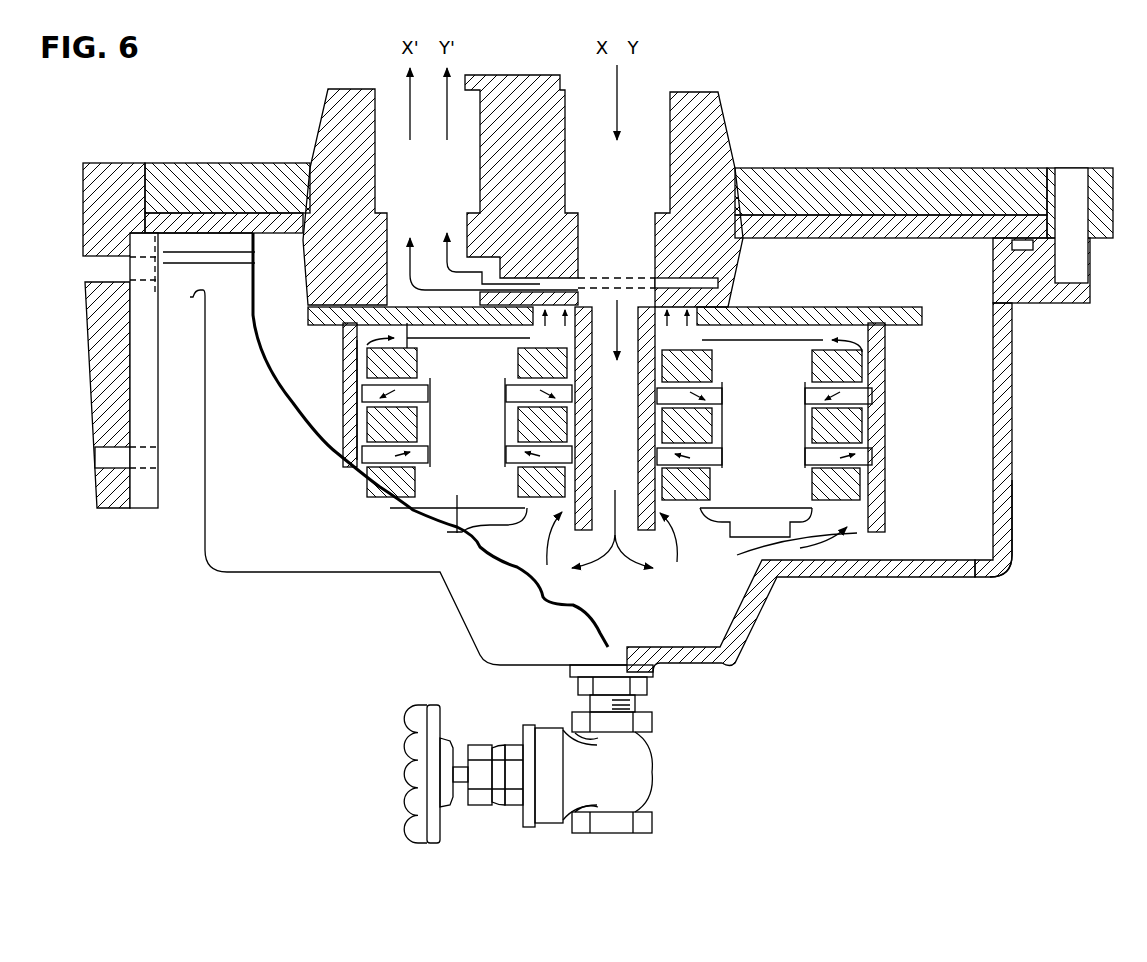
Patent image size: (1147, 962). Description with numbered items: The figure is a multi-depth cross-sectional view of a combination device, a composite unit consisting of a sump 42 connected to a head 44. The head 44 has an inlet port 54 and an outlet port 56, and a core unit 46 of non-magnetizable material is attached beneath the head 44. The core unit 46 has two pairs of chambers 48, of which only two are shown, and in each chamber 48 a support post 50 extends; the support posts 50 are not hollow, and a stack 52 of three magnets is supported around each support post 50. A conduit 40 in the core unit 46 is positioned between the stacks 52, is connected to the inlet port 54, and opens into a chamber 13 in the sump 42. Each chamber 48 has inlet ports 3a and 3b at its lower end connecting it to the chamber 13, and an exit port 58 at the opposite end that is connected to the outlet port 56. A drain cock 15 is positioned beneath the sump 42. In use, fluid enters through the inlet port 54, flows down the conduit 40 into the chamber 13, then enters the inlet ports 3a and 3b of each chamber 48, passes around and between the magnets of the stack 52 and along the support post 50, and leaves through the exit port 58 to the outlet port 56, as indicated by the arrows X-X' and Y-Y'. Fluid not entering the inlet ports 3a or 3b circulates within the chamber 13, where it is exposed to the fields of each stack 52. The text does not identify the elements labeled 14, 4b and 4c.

The chamber 13 is at (720, 623).
The housing side wall 14 is at (980, 415).
The drain cock 15 is at (572, 848).
The inlet port 3a is at (562, 517).
The inlet port 3b is at (693, 523).
The passage 4b is at (545, 342).
The passage 4c is at (558, 303).
The conduit 40 is at (620, 435).
The sump 42 is at (1013, 505).
The head 44 is at (950, 187).
The core unit 46 is at (642, 370).
The chamber 48 is at (860, 520).
The support post 50 is at (457, 533).
The stack 52 is at (898, 425).
The inlet port 54 is at (702, 125).
The outlet port 56 is at (387, 133).
The exit port 58 is at (700, 300).